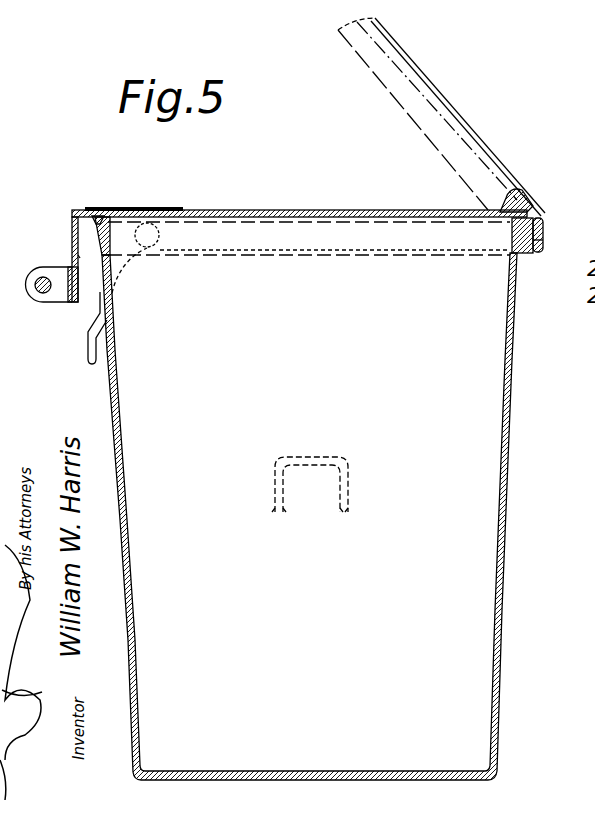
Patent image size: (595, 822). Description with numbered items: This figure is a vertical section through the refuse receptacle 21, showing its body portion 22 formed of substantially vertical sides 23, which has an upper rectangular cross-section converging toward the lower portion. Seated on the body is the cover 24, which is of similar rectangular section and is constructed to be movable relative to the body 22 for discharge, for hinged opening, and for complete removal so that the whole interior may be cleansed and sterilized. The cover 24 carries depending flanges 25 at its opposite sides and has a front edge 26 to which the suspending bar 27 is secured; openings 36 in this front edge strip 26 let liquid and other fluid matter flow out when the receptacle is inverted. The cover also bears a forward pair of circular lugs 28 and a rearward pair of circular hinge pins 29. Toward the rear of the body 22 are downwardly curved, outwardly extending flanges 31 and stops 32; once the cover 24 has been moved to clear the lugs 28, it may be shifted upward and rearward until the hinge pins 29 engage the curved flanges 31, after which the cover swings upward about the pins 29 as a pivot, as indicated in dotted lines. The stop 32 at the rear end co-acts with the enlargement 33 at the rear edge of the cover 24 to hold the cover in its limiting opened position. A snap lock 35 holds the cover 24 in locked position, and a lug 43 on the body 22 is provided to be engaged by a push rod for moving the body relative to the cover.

The receptacle 21 is at (380, 398).
The body portion 22 is at (310, 526).
The vertical sides 23 is at (120, 425).
The cover 24 is at (271, 211).
The depending flanges 25 is at (380, 236).
The front edge 26 is at (80, 255).
The suspending bar 27 is at (44, 276).
The circular lugs 28 is at (153, 245).
The circular hinge pins 29 is at (512, 240).
The downwardly curved outwardly extending flanges 31 is at (544, 222).
The stops 32 is at (545, 238).
The enlargement 33 is at (513, 203).
The snap lock 35 is at (100, 216).
The openings 36 is at (70, 222).
The lug 43 is at (88, 345).